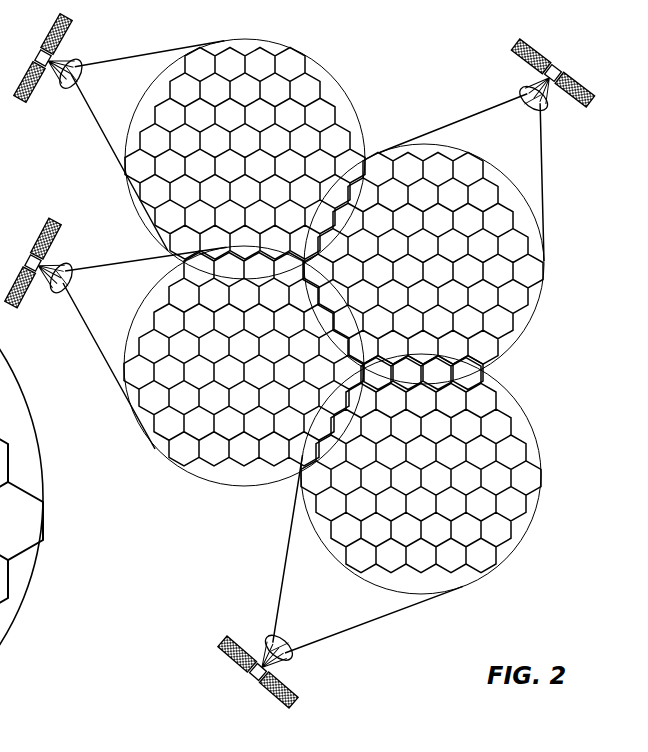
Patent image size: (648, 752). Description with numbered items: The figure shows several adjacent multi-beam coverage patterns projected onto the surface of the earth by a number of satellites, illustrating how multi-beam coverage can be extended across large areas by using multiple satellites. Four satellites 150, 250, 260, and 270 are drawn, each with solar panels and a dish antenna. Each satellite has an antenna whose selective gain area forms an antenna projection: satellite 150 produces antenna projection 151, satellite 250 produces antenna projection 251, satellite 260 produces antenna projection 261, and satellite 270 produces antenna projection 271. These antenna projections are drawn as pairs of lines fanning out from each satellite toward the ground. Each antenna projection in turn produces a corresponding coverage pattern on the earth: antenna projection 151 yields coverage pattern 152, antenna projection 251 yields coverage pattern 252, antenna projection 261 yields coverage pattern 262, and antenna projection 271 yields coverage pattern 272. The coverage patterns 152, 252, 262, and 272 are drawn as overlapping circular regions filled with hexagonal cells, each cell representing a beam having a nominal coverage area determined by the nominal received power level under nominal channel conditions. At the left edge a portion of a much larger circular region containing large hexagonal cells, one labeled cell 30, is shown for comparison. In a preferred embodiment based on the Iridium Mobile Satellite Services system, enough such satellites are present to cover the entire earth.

The hexagonal cell of large coverage beam 30 is at (22, 534).
The satellite 150 is at (38, 48).
The antenna projection 151 is at (133, 82).
The coverage pattern 152 is at (338, 78).
The satellite 250 is at (57, 221).
The antenna projection 251 is at (125, 290).
The coverage pattern 252 is at (196, 480).
The satellite 260 is at (297, 656).
The antenna projection 261 is at (370, 618).
The coverage pattern 262 is at (508, 560).
The satellite 270 is at (524, 84).
The antenna projection 271 is at (539, 167).
The coverage pattern 272 is at (518, 340).